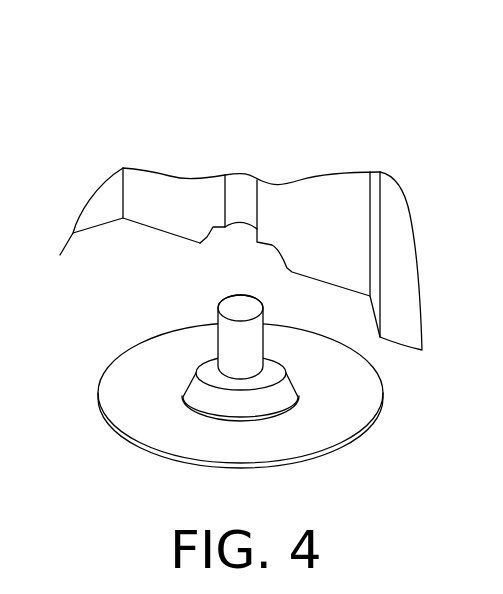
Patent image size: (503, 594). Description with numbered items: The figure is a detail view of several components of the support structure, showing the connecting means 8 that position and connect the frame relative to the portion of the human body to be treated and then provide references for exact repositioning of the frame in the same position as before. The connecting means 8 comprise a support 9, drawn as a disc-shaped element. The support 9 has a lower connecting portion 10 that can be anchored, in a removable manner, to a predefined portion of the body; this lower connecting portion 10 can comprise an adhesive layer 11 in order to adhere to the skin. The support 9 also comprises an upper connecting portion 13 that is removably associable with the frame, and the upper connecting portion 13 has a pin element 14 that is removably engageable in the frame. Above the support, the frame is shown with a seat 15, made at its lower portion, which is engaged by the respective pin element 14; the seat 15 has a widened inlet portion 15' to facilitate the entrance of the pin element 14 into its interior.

The connecting means 8 is at (254, 404).
The support 9 is at (285, 418).
The lower connecting portion 10 is at (322, 434).
The adhesive layer 11 is at (180, 462).
The upper connecting portion 13 is at (340, 315).
The pin element 14 is at (228, 343).
The seat 15 is at (266, 219).
The widened inlet portion 15' is at (199, 239).